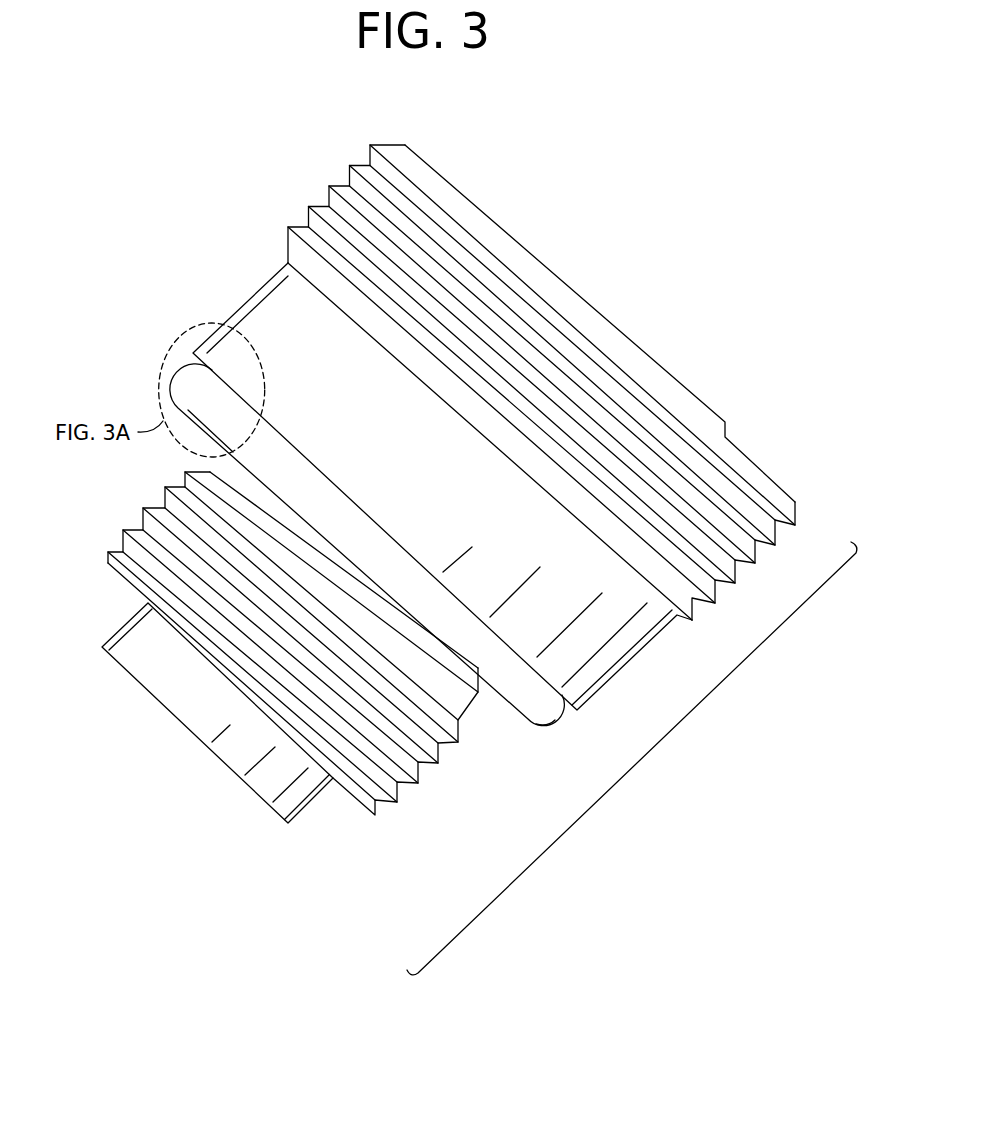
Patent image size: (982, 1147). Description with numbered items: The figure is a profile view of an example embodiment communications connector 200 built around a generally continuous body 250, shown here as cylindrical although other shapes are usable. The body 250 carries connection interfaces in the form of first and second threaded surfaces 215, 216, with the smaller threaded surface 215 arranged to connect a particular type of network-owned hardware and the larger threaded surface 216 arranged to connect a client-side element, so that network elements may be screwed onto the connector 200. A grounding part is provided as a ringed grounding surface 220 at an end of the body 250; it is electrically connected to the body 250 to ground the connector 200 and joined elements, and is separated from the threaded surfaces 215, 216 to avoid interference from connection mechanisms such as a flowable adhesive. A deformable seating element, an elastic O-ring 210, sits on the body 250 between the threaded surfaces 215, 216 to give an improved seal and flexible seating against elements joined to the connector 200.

The communications connector 200 is at (205, 250).
The O-ring 210 is at (554, 713).
The first threaded surface 215 is at (420, 770).
The second threaded surface 216 is at (331, 185).
The grounding surface 220 is at (188, 710).
The body 250 is at (632, 758).